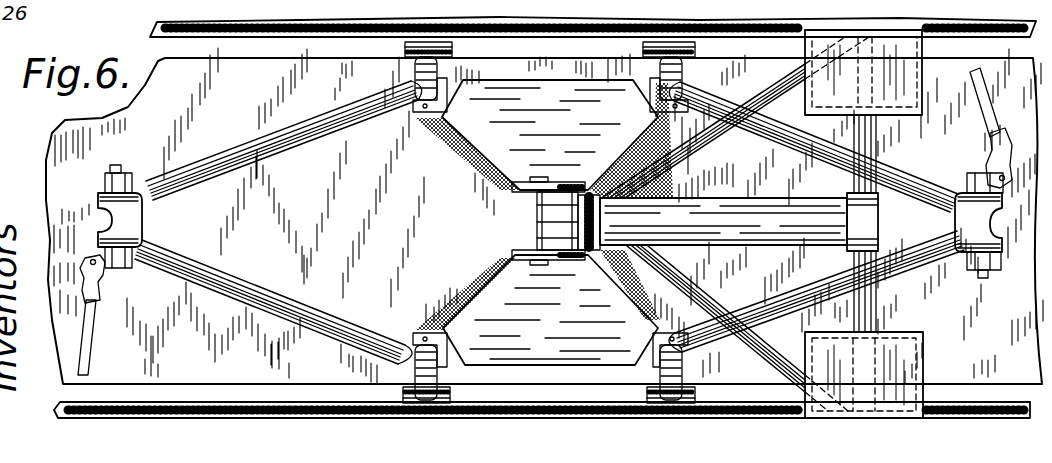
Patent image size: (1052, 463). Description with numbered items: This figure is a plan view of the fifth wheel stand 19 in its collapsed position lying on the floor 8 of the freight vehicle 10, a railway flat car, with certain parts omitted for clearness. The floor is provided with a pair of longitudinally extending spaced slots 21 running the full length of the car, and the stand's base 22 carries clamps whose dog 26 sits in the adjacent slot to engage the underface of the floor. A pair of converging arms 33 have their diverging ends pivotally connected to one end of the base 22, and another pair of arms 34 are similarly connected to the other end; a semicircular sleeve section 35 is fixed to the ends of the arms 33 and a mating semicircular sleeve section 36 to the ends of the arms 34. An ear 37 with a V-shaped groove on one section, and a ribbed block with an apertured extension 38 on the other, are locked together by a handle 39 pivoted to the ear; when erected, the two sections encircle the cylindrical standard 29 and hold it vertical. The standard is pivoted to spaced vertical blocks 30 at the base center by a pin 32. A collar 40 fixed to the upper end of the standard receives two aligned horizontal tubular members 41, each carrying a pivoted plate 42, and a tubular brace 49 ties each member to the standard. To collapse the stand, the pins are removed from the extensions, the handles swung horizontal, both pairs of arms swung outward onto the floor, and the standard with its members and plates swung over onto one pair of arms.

The floor 8 is at (997, 133).
The freight vehicle 10 is at (51, 364).
The fifth wheel stand 19 is at (246, 136).
The slots 21 is at (1005, 50).
The base 22 is at (477, 140).
The dog 26 is at (447, 393).
The cylindrical standard 29 is at (795, 200).
The vertical blocks 30 is at (520, 185).
The pin 32 is at (547, 262).
The arms 33 is at (303, 123).
The arms 34 is at (898, 168).
The semicircular sleeve section 35 is at (138, 218).
The semicircular sleeve section 36 is at (963, 222).
The ear 37 is at (122, 268).
The apertured extension 38 is at (122, 168).
The handle 39 is at (92, 360).
The collar 40 is at (870, 217).
The tubular member 41 is at (877, 127).
The plate 42 is at (805, 62).
The brace 49 is at (716, 141).